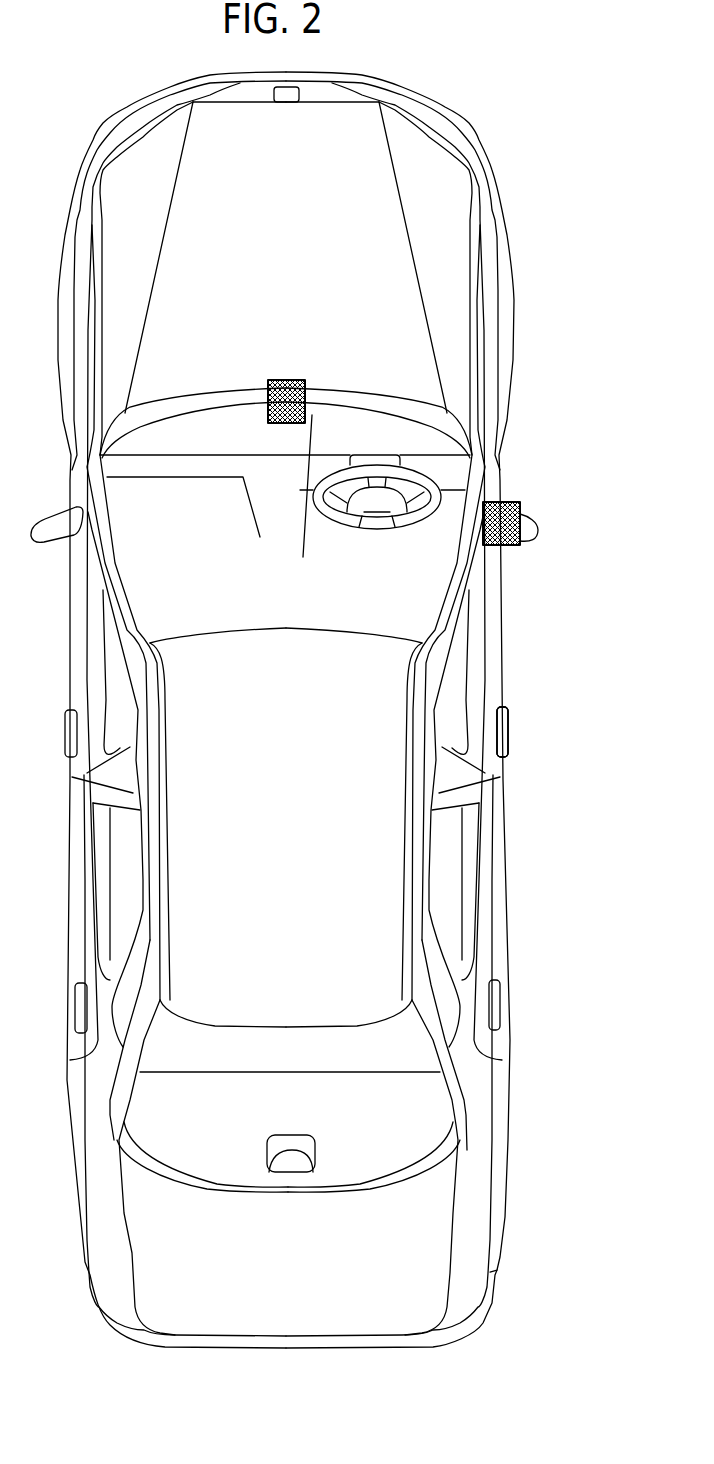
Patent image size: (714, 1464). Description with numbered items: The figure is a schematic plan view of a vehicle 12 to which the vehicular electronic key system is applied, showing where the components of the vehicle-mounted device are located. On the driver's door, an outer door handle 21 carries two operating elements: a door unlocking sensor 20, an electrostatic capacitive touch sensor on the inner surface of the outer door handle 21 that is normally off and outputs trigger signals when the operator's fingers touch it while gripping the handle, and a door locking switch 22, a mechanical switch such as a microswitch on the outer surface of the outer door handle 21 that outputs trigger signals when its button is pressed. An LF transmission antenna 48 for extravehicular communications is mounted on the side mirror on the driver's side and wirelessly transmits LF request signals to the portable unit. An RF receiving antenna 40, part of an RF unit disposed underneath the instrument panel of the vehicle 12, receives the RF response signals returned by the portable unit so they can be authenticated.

The vehicle 12 is at (503, 221).
The RF receiving antenna 40 is at (288, 380).
The LF transmission antenna 48 is at (512, 546).
The door unlocking sensor 20 is at (508, 717).
The outer door handle 21 is at (509, 727).
The door locking switch 22 is at (508, 745).